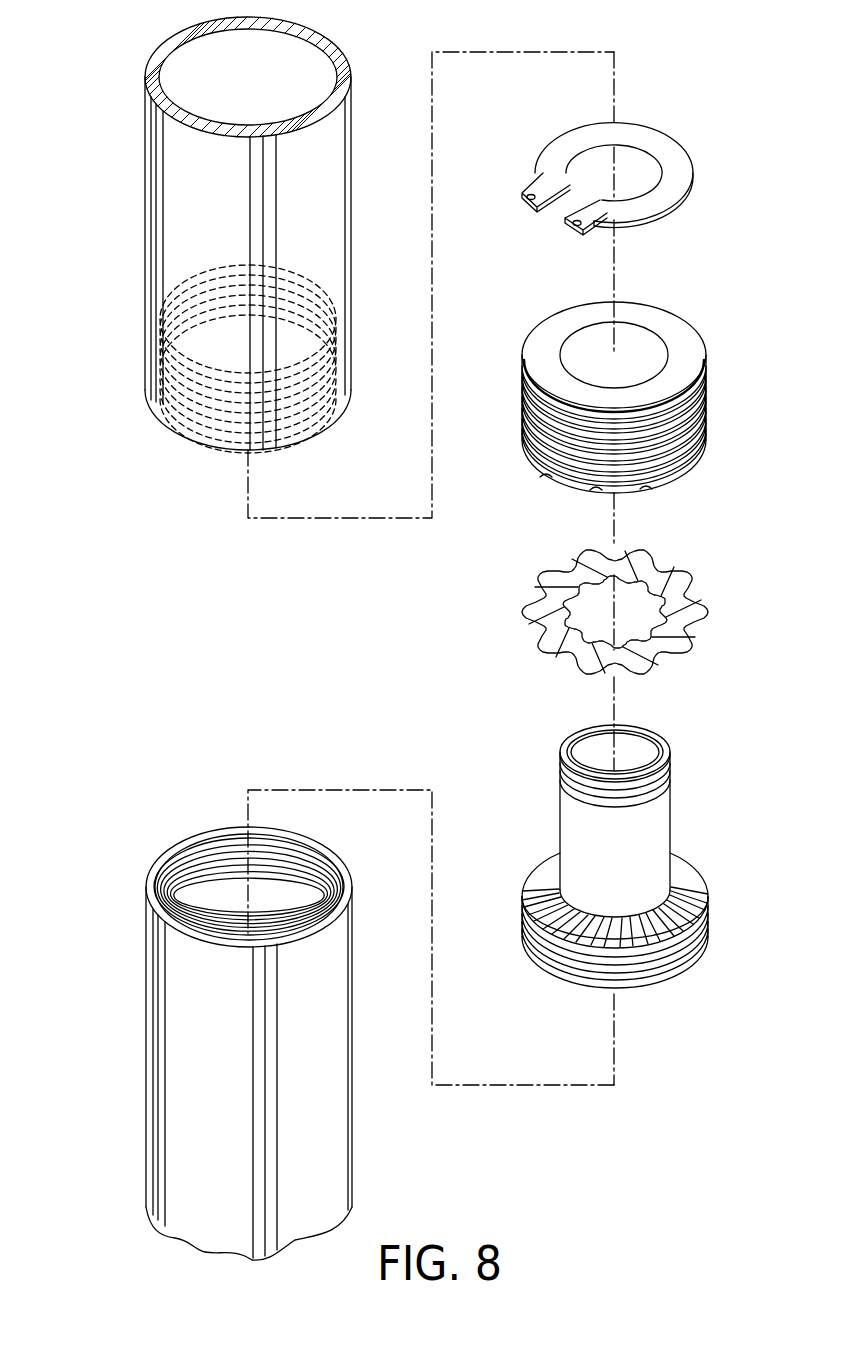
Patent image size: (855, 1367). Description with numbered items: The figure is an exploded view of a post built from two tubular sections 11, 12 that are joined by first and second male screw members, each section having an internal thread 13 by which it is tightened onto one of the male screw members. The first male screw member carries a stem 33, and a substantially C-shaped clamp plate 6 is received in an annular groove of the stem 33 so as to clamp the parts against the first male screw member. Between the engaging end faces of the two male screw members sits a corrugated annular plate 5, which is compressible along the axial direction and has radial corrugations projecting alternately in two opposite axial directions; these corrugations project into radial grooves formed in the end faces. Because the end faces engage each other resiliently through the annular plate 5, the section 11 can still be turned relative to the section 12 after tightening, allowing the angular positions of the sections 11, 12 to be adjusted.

The section 12 is at (352, 192).
The internal thread 13 is at (195, 420).
The section 11 is at (352, 943).
The clamp plate 6 is at (690, 186).
The corrugated annular plate 5 is at (705, 615).
The stem 33 is at (668, 822).